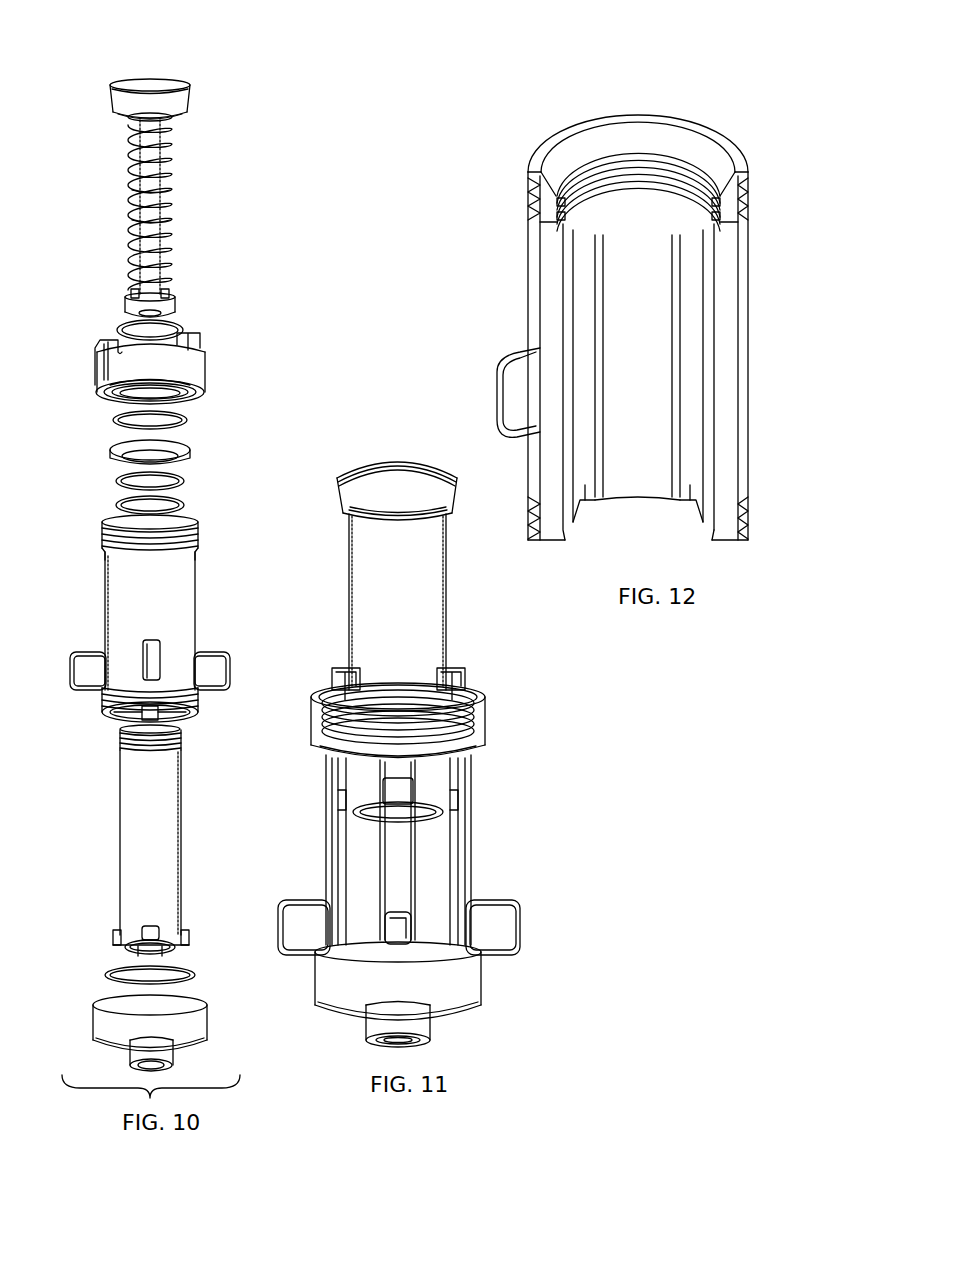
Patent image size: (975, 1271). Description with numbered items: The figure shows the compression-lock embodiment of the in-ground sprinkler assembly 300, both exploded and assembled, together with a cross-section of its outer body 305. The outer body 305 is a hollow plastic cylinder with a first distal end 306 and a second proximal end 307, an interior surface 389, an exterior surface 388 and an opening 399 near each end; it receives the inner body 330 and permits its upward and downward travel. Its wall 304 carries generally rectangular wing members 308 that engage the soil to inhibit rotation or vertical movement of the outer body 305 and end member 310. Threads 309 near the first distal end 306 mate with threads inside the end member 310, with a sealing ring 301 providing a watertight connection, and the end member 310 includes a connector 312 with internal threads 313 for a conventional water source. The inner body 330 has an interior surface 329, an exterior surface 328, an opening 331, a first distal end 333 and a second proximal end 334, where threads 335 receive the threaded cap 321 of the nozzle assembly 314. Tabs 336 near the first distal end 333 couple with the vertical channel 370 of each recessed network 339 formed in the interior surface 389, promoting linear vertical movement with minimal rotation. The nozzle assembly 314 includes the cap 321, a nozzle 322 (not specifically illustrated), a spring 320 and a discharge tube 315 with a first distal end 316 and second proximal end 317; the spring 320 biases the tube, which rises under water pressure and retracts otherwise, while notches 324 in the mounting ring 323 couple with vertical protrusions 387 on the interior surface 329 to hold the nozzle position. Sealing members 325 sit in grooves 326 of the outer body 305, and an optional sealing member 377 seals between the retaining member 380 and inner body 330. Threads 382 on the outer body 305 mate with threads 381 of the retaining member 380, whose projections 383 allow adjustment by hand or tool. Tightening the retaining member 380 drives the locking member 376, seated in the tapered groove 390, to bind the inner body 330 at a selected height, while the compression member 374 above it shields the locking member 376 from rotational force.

In FIG. 10, the in-ground sprinkler assembly 300 is at (286, 356).
In FIG. 11, the in-ground sprinkler assembly 300 is at (576, 666).
In FIG. 10, the sealing ring 301 is at (190, 984).
In FIG. 10, the wall 304 is at (195, 618).
In FIG. 10, the outer body 305 is at (158, 621).
In FIG. 10, the first distal end 306 is at (90, 706).
In FIG. 10, the second proximal end 307 is at (161, 614).
In FIG. 10, the wing members 308 is at (88, 655).
In FIG. 11, the wing members 308 is at (496, 905).
In FIG. 10, the threads 309 is at (156, 706).
In FIG. 10, the end member 310 is at (111, 1033).
In FIG. 11, the end member 310 is at (485, 983).
In FIG. 10, the connector 312 is at (151, 1054).
In FIG. 11, the connector 312 is at (469, 1040).
In FIG. 10, the internal threads 313 is at (151, 1065).
In FIG. 11, the internal threads 313 is at (410, 1048).
In FIG. 10, the nozzle assembly 314 is at (151, 170).
In FIG. 10, the discharge tube 315 is at (180, 220).
In FIG. 10, the first distal end 316 is at (155, 273).
In FIG. 10, the second proximal end 317 is at (120, 134).
In FIG. 10, the spring 320 is at (170, 190).
In FIG. 10, the cap 321 is at (193, 110).
In FIG. 11, the cap 321 is at (386, 460).
In FIG. 10, the nozzle 322 is at (186, 68).
In FIG. 10, the mounting ring 323 is at (172, 310).
In FIG. 10, the notches 324 is at (135, 290).
In FIG. 10, the sealing members 325 is at (118, 505).
In FIG. 12, the grooves 326 is at (722, 206).
In FIG. 10, the exterior surface 328 is at (178, 841).
In FIG. 10, the interior surface 329 is at (142, 946).
In FIG. 10, the inner body 330 is at (170, 724).
In FIG. 11, the inner body 330 is at (447, 582).
In FIG. 10, the opening 331 is at (176, 738).
In FIG. 10, the first distal end 333 is at (156, 931).
In FIG. 10, the second proximal end 334 is at (170, 724).
In FIG. 10, the threads 335 is at (130, 727).
In FIG. 10, the tabs 336 is at (152, 928).
In FIG. 12, the recessed networks 339 is at (578, 279).
In FIG. 12, the vertical channel 370 is at (585, 490).
In FIG. 10, the compression member 374 is at (190, 420).
In FIG. 10, the locking member 376 is at (188, 456).
In FIG. 10, the sealing member 377 is at (118, 326).
In FIG. 10, the retaining member 380 is at (159, 366).
In FIG. 11, the retaining member 380 is at (486, 723).
In FIG. 10, the threads 381 is at (118, 385).
In FIG. 10, the threads 382 is at (102, 539).
In FIG. 10, the projections 383 is at (95, 352).
In FIG. 10, the vertical protrusions 387 is at (166, 953).
In FIG. 10, the exterior surface 388 is at (113, 598).
In FIG. 12, the interior surface 389 is at (650, 306).
In FIG. 12, the tapered groove 390 is at (647, 303).
In FIG. 10, the opening 399 is at (136, 723).